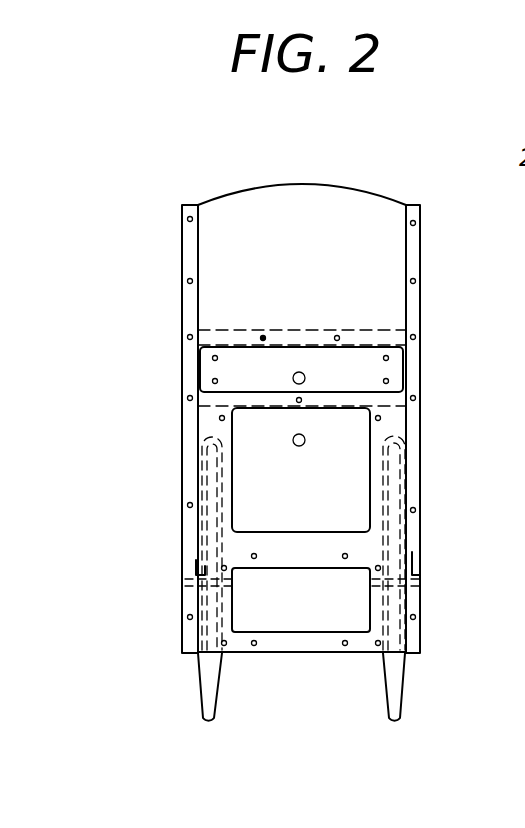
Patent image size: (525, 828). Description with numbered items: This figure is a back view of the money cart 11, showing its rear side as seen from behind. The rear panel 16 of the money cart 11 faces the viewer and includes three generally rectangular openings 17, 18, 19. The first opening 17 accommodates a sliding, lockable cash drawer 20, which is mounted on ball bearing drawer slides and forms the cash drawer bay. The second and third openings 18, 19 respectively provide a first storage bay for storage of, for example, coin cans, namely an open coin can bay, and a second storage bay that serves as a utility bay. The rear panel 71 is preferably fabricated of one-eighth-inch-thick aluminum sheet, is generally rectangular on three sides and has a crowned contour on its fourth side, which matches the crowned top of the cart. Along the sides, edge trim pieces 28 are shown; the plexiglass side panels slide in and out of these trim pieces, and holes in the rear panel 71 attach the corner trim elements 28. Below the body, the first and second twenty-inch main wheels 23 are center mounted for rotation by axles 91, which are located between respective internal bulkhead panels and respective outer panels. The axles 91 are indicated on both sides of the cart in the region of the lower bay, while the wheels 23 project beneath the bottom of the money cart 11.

The money cart 11 is at (352, 176).
The rear panel 16 is at (355, 268).
The first opening 17 is at (405, 371).
The second opening 18 is at (343, 471).
The third opening 19 is at (345, 597).
The cash drawer 20 is at (357, 362).
The main wheels 23 is at (390, 715).
The edge trim pieces 28 is at (185, 418).
The rear panel 71 is at (304, 550).
The axles 91 is at (200, 562).